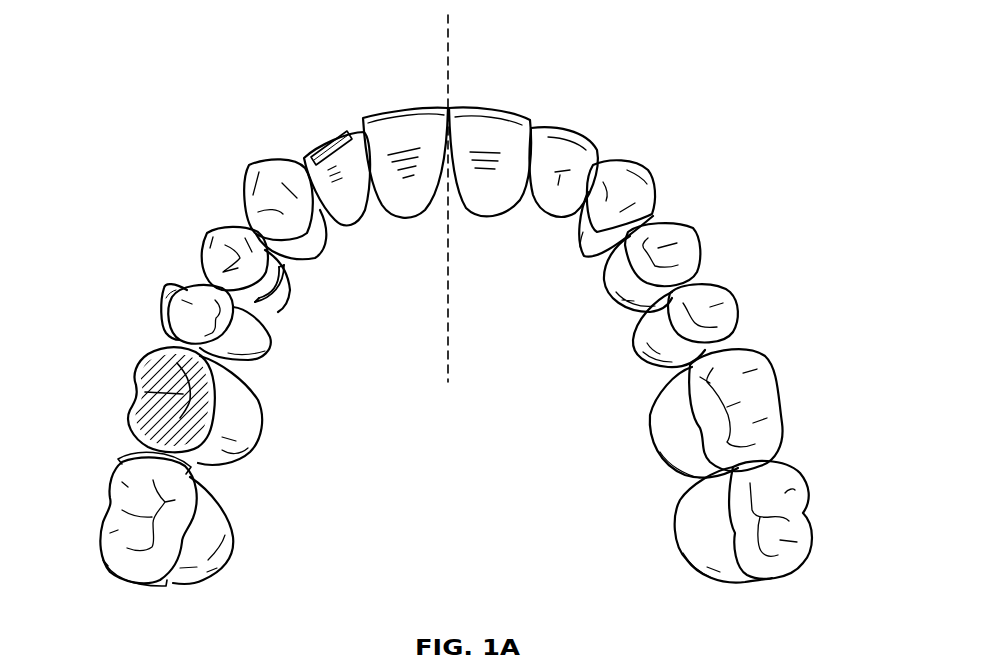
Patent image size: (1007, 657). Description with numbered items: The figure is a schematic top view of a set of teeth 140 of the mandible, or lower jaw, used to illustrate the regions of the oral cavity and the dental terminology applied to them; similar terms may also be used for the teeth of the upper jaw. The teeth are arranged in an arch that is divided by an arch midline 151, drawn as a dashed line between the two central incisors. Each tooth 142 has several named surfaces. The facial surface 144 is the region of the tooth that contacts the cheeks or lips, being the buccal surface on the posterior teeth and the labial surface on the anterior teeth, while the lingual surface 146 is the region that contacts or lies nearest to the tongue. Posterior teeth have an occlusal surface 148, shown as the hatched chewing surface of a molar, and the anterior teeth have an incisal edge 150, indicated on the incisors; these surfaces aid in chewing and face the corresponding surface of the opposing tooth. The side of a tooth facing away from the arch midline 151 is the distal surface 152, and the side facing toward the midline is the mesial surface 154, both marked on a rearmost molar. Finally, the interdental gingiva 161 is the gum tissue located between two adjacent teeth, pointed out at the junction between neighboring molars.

The set of teeth 140 is at (778, 88).
The tooth 142 is at (612, 126).
The facial surface 144 is at (162, 311).
The lingual surface 146 is at (288, 292).
The occlusal surface 148 is at (205, 403).
The incisal edge 150 is at (322, 147).
The arch midline 151 is at (450, 40).
The distal surface 152 is at (112, 574).
The mesial surface 154 is at (119, 461).
The interdental gingiva 161 is at (682, 490).